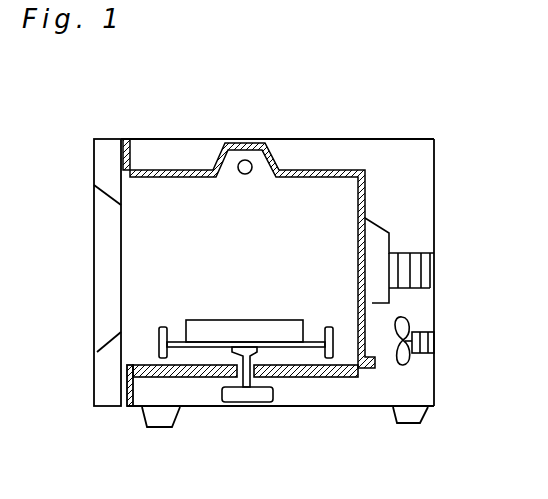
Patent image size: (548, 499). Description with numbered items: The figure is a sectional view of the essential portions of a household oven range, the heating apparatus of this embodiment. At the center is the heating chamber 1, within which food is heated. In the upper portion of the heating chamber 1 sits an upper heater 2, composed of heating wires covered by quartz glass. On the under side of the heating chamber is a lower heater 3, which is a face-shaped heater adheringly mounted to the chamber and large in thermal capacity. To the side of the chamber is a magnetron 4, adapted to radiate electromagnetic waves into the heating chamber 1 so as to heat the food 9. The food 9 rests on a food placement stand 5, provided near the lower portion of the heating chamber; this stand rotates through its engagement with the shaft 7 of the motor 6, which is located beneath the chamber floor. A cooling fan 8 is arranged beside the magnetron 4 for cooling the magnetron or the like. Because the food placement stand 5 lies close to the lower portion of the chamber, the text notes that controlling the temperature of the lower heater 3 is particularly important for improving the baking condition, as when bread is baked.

The heating chamber 1 is at (302, 196).
The upper heater 2 is at (249, 159).
The lower heater 3 is at (332, 374).
The magnetron 4 is at (410, 264).
The food placement stand 5 is at (181, 340).
The motor 6 is at (257, 401).
The shaft 7 is at (280, 377).
The cooling fan 8 is at (425, 339).
The food 9 is at (223, 327).